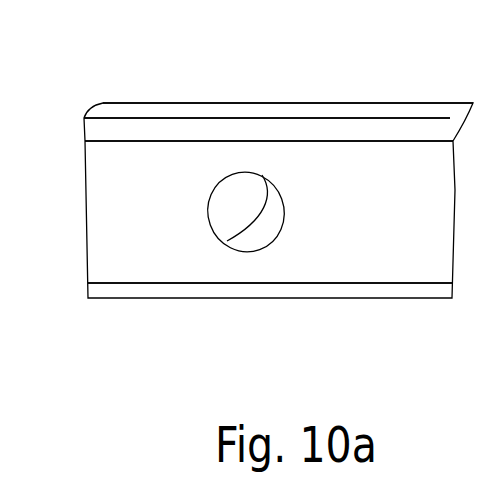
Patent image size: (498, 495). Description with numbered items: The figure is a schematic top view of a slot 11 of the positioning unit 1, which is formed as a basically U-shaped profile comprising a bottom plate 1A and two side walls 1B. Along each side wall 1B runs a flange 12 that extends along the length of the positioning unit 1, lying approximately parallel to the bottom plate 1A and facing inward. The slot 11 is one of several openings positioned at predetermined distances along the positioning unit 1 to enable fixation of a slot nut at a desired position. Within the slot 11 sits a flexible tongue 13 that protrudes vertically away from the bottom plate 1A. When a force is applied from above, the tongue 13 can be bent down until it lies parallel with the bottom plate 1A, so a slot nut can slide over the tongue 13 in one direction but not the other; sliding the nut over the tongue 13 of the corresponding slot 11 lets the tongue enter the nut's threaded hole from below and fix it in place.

The positioning unit 1 is at (403, 237).
The bottom plate 1A is at (155, 218).
The side wall 1B is at (437, 118).
The slot 11 is at (267, 235).
The flange 12 is at (360, 108).
The flexible tongue 13 is at (235, 192).